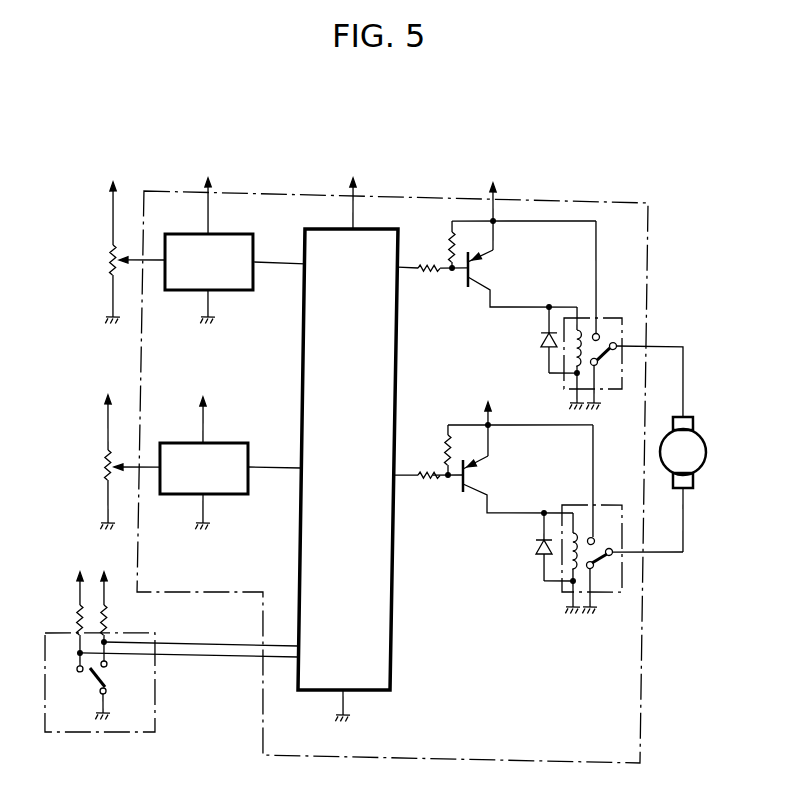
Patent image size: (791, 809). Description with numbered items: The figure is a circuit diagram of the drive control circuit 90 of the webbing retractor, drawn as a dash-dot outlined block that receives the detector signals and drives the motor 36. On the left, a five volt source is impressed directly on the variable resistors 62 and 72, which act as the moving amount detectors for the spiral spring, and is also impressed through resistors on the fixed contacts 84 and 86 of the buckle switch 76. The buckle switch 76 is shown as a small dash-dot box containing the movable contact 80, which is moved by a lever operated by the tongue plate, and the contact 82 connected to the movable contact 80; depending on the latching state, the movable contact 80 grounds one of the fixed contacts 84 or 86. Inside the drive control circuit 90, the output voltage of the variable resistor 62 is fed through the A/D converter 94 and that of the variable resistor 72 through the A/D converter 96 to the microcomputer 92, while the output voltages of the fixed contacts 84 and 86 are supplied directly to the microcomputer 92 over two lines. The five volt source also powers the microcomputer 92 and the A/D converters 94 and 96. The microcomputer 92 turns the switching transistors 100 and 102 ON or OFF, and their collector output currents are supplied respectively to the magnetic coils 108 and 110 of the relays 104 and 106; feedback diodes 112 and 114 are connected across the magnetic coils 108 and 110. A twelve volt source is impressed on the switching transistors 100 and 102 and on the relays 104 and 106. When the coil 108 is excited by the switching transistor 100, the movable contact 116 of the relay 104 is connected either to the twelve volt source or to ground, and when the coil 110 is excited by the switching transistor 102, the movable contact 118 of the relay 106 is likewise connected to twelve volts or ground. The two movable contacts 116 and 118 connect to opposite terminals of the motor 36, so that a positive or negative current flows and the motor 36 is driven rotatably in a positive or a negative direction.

The motor 36 is at (702, 432).
The variable resistor 62 is at (104, 272).
The variable resistor 72 is at (104, 484).
The buckle switch 76 is at (168, 722).
The movable contact 80 is at (103, 700).
The contact 82 is at (112, 700).
The fixed contact 84 is at (82, 678).
The fixed contact 86 is at (111, 672).
The drive control circuit 90 is at (622, 179).
The microcomputer 92 is at (392, 582).
The A/D converter 94 is at (243, 294).
The A/D converter 96 is at (240, 498).
The switching transistor 100 is at (462, 281).
The switching transistor 102 is at (461, 484).
The relay 104 is at (632, 322).
The relay 106 is at (636, 520).
The magnetic coil 108 is at (568, 349).
The magnetic coil 110 is at (567, 557).
The feedback diode 112 is at (538, 343).
The feedback diode 114 is at (538, 545).
The movable contact 116 is at (604, 350).
The movable contact 118 is at (605, 557).